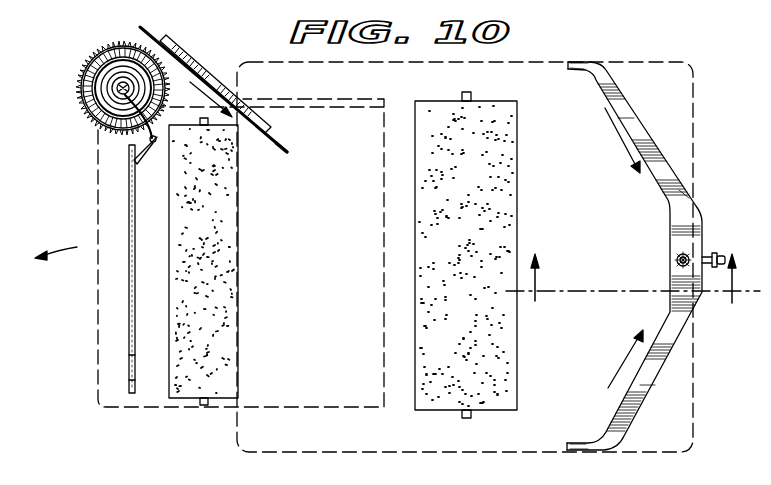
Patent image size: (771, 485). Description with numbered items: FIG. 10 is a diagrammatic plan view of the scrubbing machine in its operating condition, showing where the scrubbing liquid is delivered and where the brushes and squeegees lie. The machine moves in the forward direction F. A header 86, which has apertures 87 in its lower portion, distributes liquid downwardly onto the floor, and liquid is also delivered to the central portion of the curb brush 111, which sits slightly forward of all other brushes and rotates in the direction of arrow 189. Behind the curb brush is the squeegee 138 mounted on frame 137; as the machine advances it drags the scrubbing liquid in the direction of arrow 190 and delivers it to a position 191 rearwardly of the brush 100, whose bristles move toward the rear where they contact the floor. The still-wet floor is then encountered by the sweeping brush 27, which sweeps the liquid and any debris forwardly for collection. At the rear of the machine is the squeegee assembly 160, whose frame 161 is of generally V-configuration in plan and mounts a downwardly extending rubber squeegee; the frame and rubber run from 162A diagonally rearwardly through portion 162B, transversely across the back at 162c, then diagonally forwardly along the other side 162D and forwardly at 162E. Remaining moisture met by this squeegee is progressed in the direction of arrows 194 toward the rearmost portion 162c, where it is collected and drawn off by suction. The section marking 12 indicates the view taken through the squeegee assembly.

The arrow 189 is at (108, 44).
The curb brush 111 is at (86, 105).
The squeegee 138 is at (154, 35).
The frame 137 is at (202, 69).
The arrow 190 is at (214, 82).
The position 191 is at (288, 167).
The header 86 is at (128, 320).
The apertures 87 is at (131, 382).
The brush 100 is at (200, 372).
The sweeping brush 27 is at (447, 394).
The section line 12 is at (633, 295).
The forward direction F is at (52, 275).
The squeegee assembly 160 is at (660, 143).
The frame 161 is at (680, 191).
The squeegee portion 162A is at (596, 45).
The squeegee portion 162B is at (626, 120).
The squeegee portion 162c is at (701, 233).
The squeegee portion 162D is at (656, 358).
The squeegee portion 162E is at (590, 452).
The arrows 194 is at (618, 143).